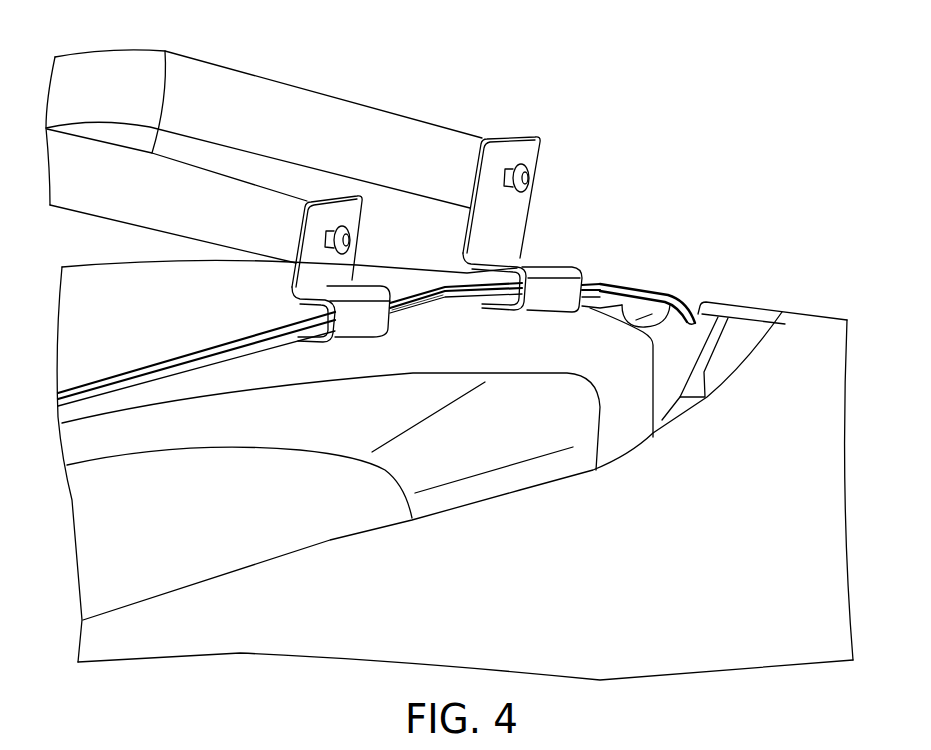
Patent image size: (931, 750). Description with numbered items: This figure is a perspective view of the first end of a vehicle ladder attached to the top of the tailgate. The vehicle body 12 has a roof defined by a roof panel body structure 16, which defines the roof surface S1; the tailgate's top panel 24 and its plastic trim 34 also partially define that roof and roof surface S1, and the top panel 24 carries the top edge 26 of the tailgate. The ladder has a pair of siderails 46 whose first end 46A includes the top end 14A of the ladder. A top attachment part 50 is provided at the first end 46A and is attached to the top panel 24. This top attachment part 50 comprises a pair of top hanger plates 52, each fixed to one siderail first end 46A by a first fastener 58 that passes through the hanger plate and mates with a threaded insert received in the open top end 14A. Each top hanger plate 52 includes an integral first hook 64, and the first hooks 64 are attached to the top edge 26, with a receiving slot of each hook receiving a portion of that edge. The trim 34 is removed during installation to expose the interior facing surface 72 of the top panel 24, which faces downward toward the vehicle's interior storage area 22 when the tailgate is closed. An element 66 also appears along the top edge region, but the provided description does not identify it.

The vehicle body 12 is at (780, 570).
The top end of the ladder 14A is at (308, 136).
The roof panel body structure 16 is at (798, 355).
The interior storage area 22 is at (140, 494).
The top panel 24 is at (668, 305).
The top edge of the tailgate 26 is at (293, 349).
The trim 34 is at (613, 288).
The siderails 46 is at (227, 67).
The first end of the siderails 46A is at (316, 306).
The top attachment part 50 is at (405, 256).
The top hanger plates 52 is at (323, 271).
The first fasteners 58 is at (352, 228).
The first hooks 64 is at (352, 328).
The wire harness 66 is at (297, 318).
The interior facing surface of the top panel 72 is at (445, 308).
The roof surface S1 is at (772, 470).